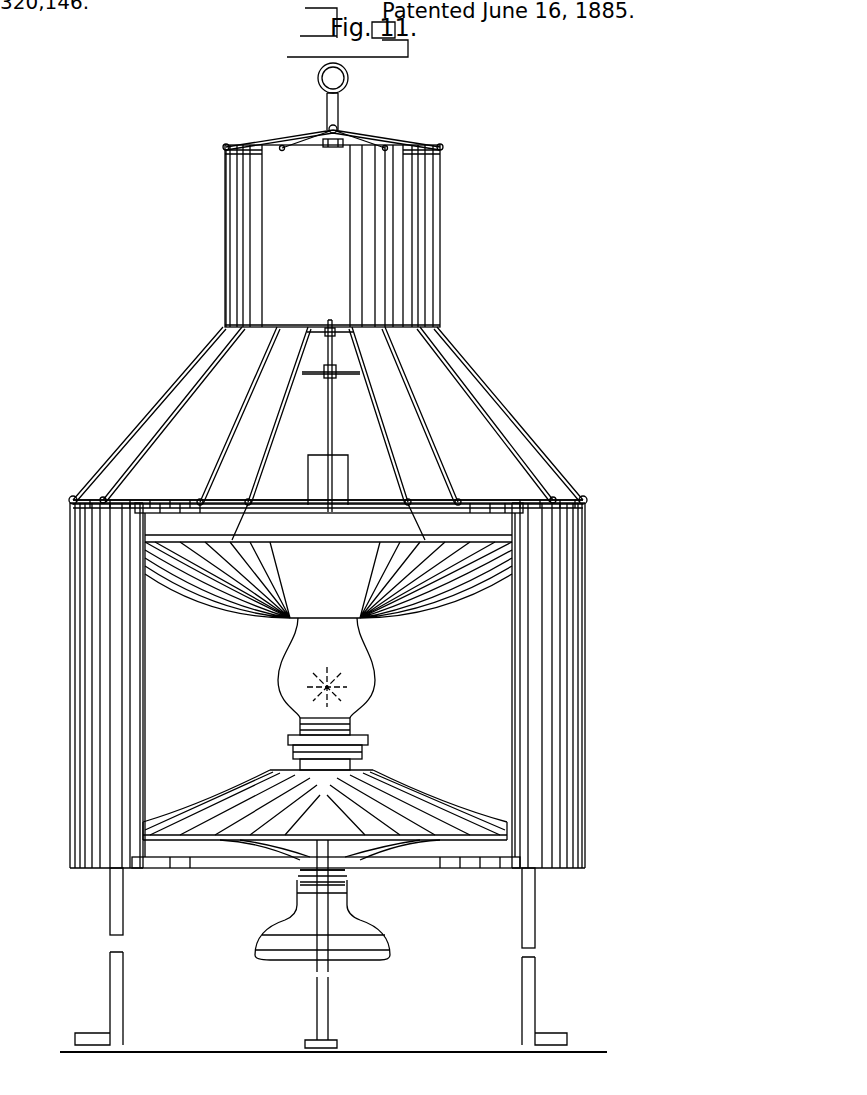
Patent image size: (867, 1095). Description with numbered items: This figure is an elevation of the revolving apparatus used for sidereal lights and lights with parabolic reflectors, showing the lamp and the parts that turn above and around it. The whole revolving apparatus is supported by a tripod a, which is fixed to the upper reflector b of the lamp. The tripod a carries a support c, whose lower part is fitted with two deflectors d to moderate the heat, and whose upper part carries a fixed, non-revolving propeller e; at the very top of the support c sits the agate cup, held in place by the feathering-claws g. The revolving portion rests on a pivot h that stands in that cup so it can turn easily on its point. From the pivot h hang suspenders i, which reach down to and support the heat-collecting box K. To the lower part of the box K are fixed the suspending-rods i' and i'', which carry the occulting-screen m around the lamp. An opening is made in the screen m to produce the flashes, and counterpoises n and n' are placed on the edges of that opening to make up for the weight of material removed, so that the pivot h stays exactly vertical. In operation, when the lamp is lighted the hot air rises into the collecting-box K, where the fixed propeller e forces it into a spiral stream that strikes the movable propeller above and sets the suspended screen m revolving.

The fixed propeller e is at (349, 79).
The feathering-claws g is at (338, 135).
The pivot h is at (340, 140).
The suspenders i is at (333, 131).
The heat-collecting box K is at (441, 200).
The suspending-rods i' is at (328, 415).
The intermediate shade rods i'' is at (328, 415).
The tripod a is at (271, 443).
The counterpoises n is at (328, 495).
The support c is at (333, 352).
The deflectors d is at (320, 338).
The occulting-screen m is at (585, 685).
The upper reflector b is at (328, 576).
The lower ring n' is at (375, 885).